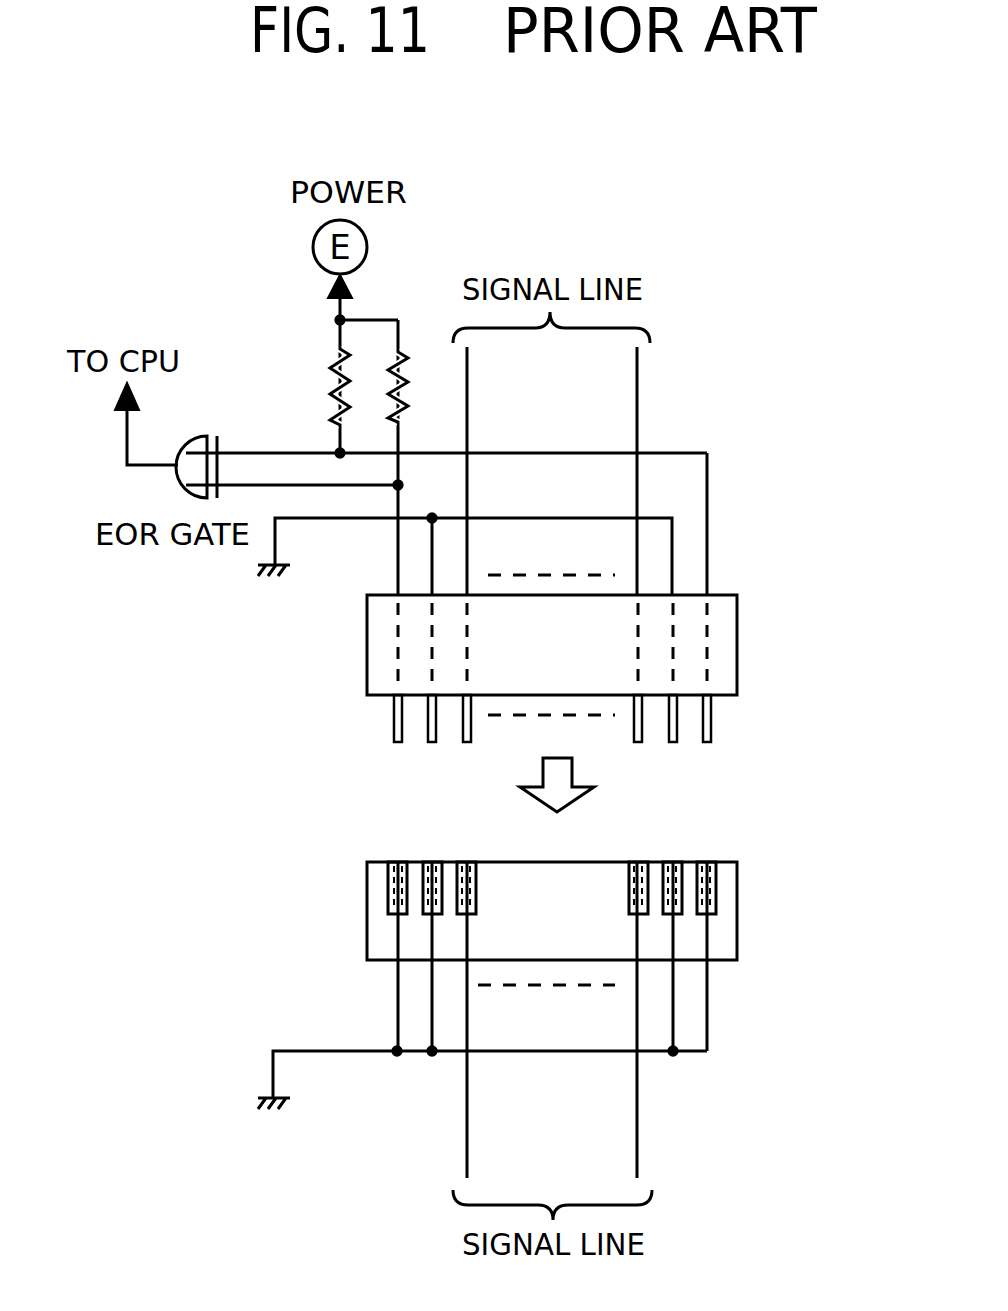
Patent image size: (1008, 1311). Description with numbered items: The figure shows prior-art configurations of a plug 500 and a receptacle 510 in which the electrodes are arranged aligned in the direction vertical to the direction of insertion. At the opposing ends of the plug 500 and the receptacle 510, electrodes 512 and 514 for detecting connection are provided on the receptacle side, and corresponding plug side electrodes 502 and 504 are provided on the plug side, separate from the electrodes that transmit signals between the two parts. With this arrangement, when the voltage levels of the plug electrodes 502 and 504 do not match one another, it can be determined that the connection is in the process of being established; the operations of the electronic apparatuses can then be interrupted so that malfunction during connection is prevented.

The plug 500 is at (737, 620).
The plug side electrode 502 is at (395, 708).
The plug side electrode 504 is at (708, 713).
The receptacle 510 is at (737, 925).
The electrode for detecting connection 512 is at (400, 862).
The electrode for detecting connection 514 is at (705, 863).